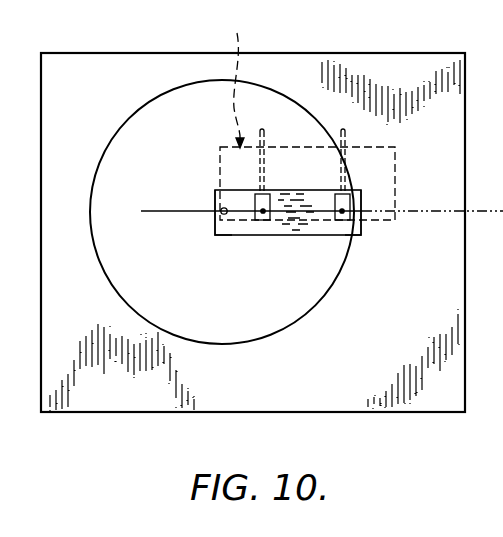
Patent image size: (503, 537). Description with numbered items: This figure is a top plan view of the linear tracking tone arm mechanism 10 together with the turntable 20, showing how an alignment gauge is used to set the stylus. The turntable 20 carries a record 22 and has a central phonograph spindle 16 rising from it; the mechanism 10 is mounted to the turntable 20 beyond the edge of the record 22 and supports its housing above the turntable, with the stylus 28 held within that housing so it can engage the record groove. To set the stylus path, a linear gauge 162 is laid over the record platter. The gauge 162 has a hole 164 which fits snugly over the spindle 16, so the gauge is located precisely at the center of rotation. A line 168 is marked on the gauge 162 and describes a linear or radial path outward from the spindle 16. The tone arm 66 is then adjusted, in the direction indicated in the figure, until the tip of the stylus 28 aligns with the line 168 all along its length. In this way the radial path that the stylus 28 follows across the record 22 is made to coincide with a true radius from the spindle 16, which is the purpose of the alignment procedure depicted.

The linear tracking tone arm mechanism 10 is at (231, 79).
The phonograph spindle 16 is at (221, 208).
The turntable 20 is at (80, 403).
The record 22 is at (136, 126).
The stylus 28 is at (342, 214).
The tone arm 66 is at (272, 134).
The linear gauge 162 is at (248, 236).
The hole 164 is at (225, 215).
The line 168 is at (358, 213).